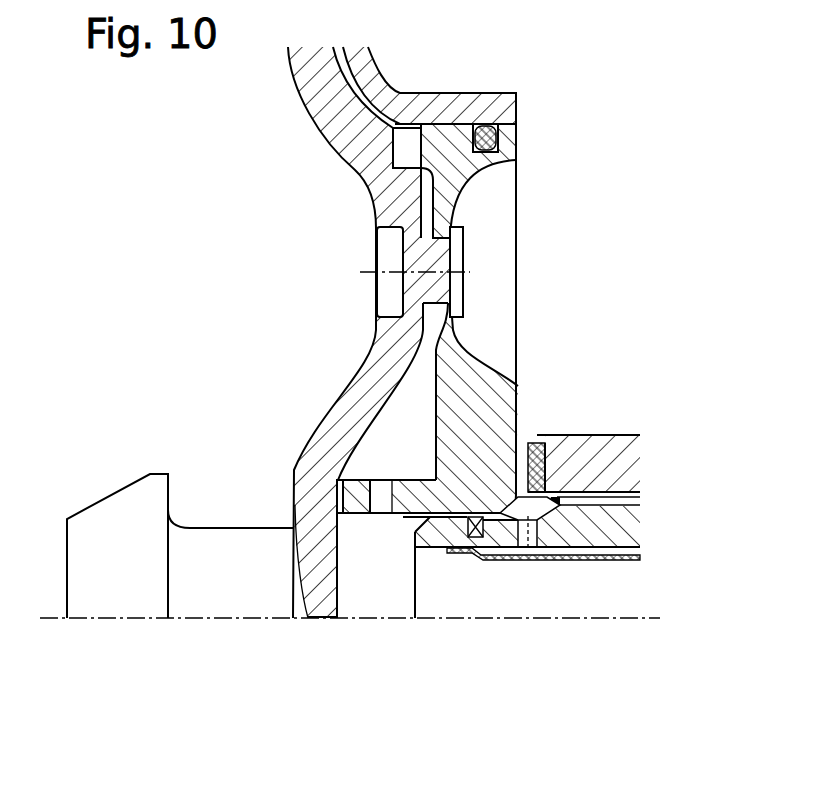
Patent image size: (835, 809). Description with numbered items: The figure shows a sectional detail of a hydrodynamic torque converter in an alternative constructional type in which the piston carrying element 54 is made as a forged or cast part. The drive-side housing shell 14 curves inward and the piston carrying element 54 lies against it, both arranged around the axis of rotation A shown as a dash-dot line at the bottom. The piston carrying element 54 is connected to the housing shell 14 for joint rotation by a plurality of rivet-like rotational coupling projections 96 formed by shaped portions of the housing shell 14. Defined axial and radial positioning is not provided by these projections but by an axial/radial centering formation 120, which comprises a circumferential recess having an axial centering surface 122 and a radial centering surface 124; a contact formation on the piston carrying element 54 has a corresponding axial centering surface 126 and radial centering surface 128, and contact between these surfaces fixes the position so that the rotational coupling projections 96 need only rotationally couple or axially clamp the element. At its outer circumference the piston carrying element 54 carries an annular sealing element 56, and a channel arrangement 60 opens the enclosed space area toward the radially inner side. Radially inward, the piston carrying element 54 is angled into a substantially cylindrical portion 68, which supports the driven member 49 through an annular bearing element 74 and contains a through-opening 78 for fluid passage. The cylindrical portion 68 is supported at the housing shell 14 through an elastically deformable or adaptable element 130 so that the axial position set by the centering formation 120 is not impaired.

The housing shell 14 is at (300, 96).
The driven member 49 is at (627, 460).
The piston carrying element 54 is at (518, 390).
The annular sealing element 56 is at (498, 138).
The channel arrangement 60 is at (425, 327).
The substantially cylindrical portion 68 is at (403, 517).
The annular bearing element 74 is at (550, 445).
The through-opening 78 is at (382, 497).
The rotational coupling projection 96 is at (448, 262).
The axial/radial centering formation 120 is at (384, 179).
The axial centering surface 122 is at (391, 148).
The radial centering surface 124 is at (377, 228).
The axial centering surface 126 is at (418, 150).
The radial centering surface 128 is at (483, 95).
The elastically deformable or adaptable element 130 is at (338, 487).
The axis of rotation A is at (656, 622).